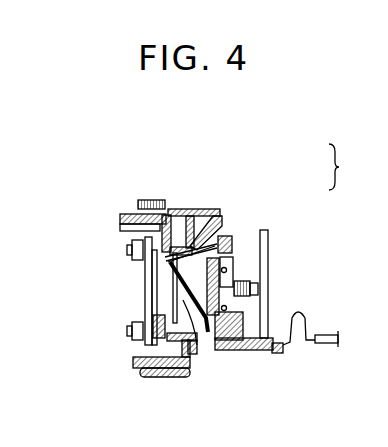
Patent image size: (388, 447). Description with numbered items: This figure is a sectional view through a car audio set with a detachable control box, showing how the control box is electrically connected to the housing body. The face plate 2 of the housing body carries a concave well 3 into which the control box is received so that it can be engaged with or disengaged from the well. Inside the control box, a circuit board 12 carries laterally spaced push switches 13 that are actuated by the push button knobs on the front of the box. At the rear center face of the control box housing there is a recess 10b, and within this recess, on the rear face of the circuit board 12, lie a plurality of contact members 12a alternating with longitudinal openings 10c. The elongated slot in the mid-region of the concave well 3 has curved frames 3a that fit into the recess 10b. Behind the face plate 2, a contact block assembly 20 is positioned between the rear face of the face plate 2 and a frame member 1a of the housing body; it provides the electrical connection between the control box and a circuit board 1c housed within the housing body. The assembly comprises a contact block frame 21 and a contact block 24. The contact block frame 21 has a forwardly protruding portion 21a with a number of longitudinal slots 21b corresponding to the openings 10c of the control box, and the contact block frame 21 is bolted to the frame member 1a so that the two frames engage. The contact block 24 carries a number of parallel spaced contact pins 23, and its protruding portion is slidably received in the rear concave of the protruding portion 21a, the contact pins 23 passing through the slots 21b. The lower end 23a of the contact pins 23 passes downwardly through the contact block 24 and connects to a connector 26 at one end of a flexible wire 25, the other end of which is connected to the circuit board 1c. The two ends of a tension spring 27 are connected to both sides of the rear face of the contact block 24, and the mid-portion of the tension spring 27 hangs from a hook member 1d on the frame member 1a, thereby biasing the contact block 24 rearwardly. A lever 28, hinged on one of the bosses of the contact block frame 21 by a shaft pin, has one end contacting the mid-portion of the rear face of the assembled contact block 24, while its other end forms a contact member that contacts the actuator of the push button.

The frame member 1a is at (268, 236).
The circuit board 1c is at (329, 347).
The hook member 1d is at (256, 290).
The face plate 2 is at (126, 204).
The concave well 3 is at (157, 231).
The curved frames 3a is at (162, 259).
The recess 10b is at (138, 359).
The longitudinal openings 10c is at (183, 287).
The circuit board 12 is at (133, 238).
The contact members 12a is at (150, 273).
The push switches 13 is at (158, 325).
The contact block assembly 20 is at (347, 167).
The contact block frame 21 is at (231, 202).
The forwardly protruding portion 21a is at (182, 358).
The longitudinal slots 21b is at (197, 345).
The contact pins 23 is at (165, 290).
The lower end 23a is at (222, 352).
The contact block 24 is at (240, 229).
The flexible wire 25 is at (308, 316).
The connector 26 is at (247, 352).
The tension spring 27 is at (240, 282).
The lever 28 is at (232, 267).